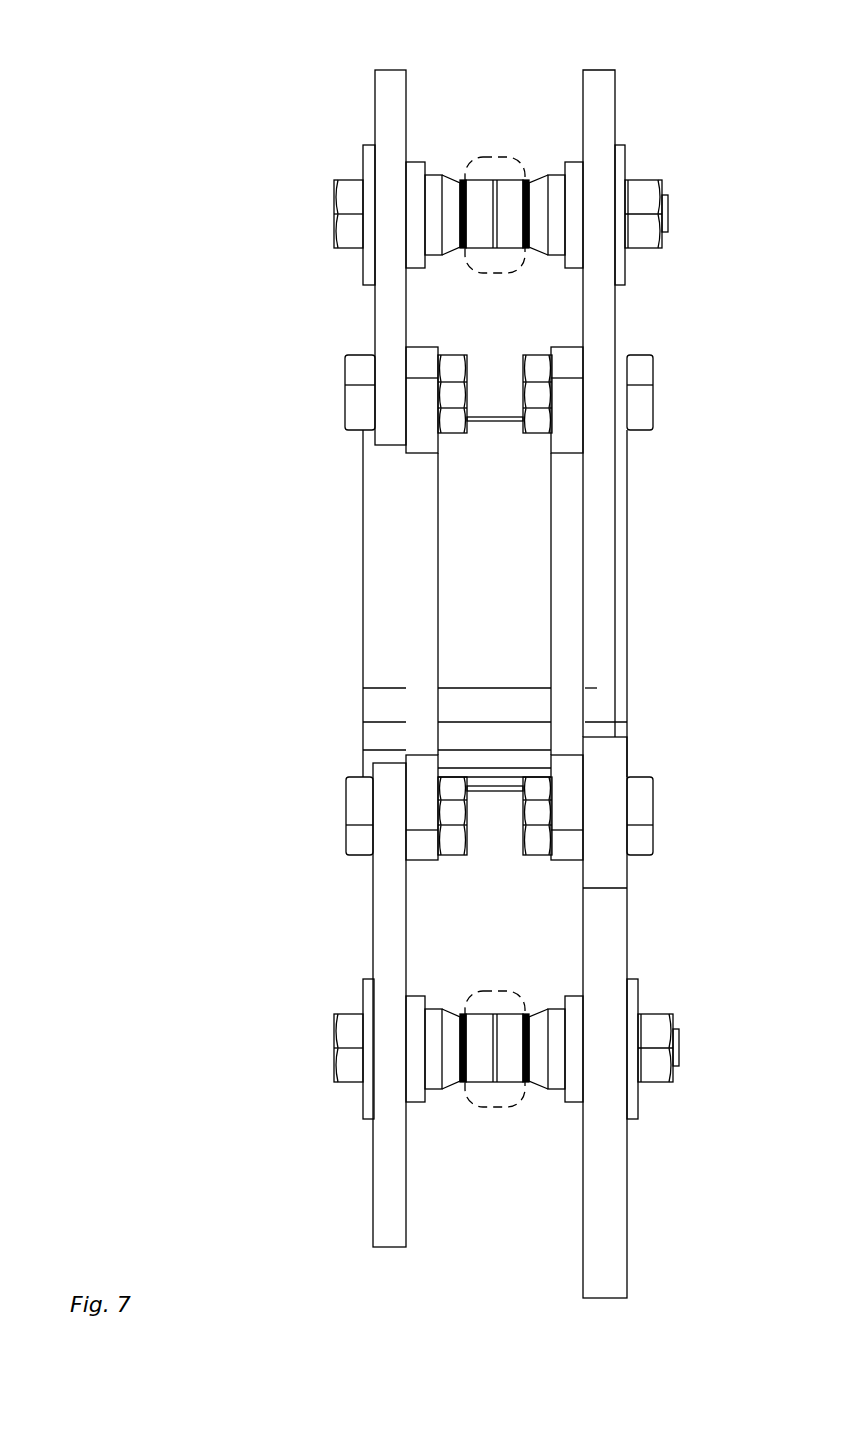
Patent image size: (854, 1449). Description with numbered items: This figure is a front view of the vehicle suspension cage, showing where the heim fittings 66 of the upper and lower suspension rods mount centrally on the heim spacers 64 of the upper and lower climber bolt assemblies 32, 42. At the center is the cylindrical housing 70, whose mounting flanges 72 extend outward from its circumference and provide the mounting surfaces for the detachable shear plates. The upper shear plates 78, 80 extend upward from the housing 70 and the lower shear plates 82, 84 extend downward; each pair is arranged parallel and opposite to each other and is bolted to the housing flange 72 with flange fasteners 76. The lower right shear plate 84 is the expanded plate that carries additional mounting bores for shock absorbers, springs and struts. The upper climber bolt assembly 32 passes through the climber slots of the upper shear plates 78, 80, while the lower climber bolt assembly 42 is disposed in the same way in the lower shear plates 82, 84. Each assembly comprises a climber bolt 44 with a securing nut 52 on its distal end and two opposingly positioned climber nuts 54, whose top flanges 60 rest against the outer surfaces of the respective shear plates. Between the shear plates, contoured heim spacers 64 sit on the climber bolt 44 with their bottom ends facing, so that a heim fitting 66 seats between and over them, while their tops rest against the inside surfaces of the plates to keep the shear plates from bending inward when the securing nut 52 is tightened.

The climber bolt assembly 32 is at (335, 126).
The climber bolt assembly 42 is at (335, 960).
The climber bolt 44 is at (334, 197).
The securing nut 52 is at (660, 240).
The climber nut 54 is at (360, 272).
The climber nut flange 60 is at (362, 152).
The heim spacer 64 is at (428, 160).
The heim fitting 66 is at (490, 157).
The cylindrical housing 70 is at (361, 571).
The mounting flange 72 is at (562, 572).
The flange fastener 76 is at (345, 366).
The upper left shear plate 78 is at (388, 69).
The upper right shear plate 80 is at (603, 69).
The lower left shear plate 82 is at (388, 1248).
The lower right shear plate 84 is at (605, 1299).